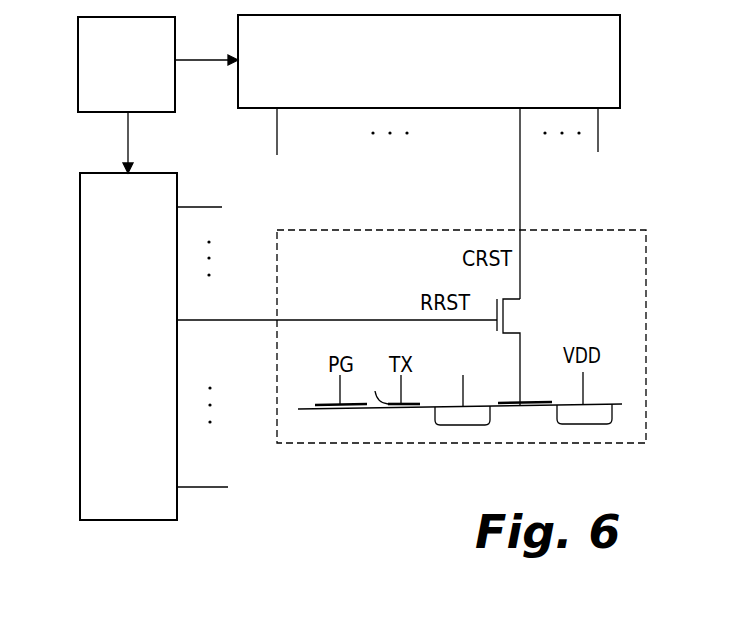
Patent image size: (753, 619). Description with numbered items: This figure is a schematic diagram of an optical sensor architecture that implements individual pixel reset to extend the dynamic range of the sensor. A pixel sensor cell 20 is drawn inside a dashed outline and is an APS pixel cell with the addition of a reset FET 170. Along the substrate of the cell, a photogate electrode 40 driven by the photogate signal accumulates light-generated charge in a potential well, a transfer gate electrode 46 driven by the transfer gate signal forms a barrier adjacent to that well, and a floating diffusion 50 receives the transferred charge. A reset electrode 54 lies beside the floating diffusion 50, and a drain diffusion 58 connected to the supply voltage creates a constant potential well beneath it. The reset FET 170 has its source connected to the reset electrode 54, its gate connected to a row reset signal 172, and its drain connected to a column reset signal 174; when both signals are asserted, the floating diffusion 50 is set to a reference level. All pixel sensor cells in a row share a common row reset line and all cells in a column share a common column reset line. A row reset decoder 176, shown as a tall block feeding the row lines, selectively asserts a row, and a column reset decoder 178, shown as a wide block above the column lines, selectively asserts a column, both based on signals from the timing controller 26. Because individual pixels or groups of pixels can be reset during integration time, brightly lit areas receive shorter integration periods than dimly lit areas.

The timing controller 26 is at (107, 112).
The column reset decoder 178 is at (260, 112).
The row reset decoder 176 is at (110, 520).
The column reset signal (CRST) 174 is at (520, 205).
The row reset signal (RRST) 172 is at (370, 320).
The reset FET 170 is at (513, 301).
The pixel sensor cell 20 is at (357, 445).
The photogate electrode 40 is at (323, 404).
The transfer gate electrode 46 is at (416, 404).
The floating diffusion 50 is at (475, 405).
The reset electrode 54 is at (535, 402).
The drain diffusion 58 is at (603, 404).